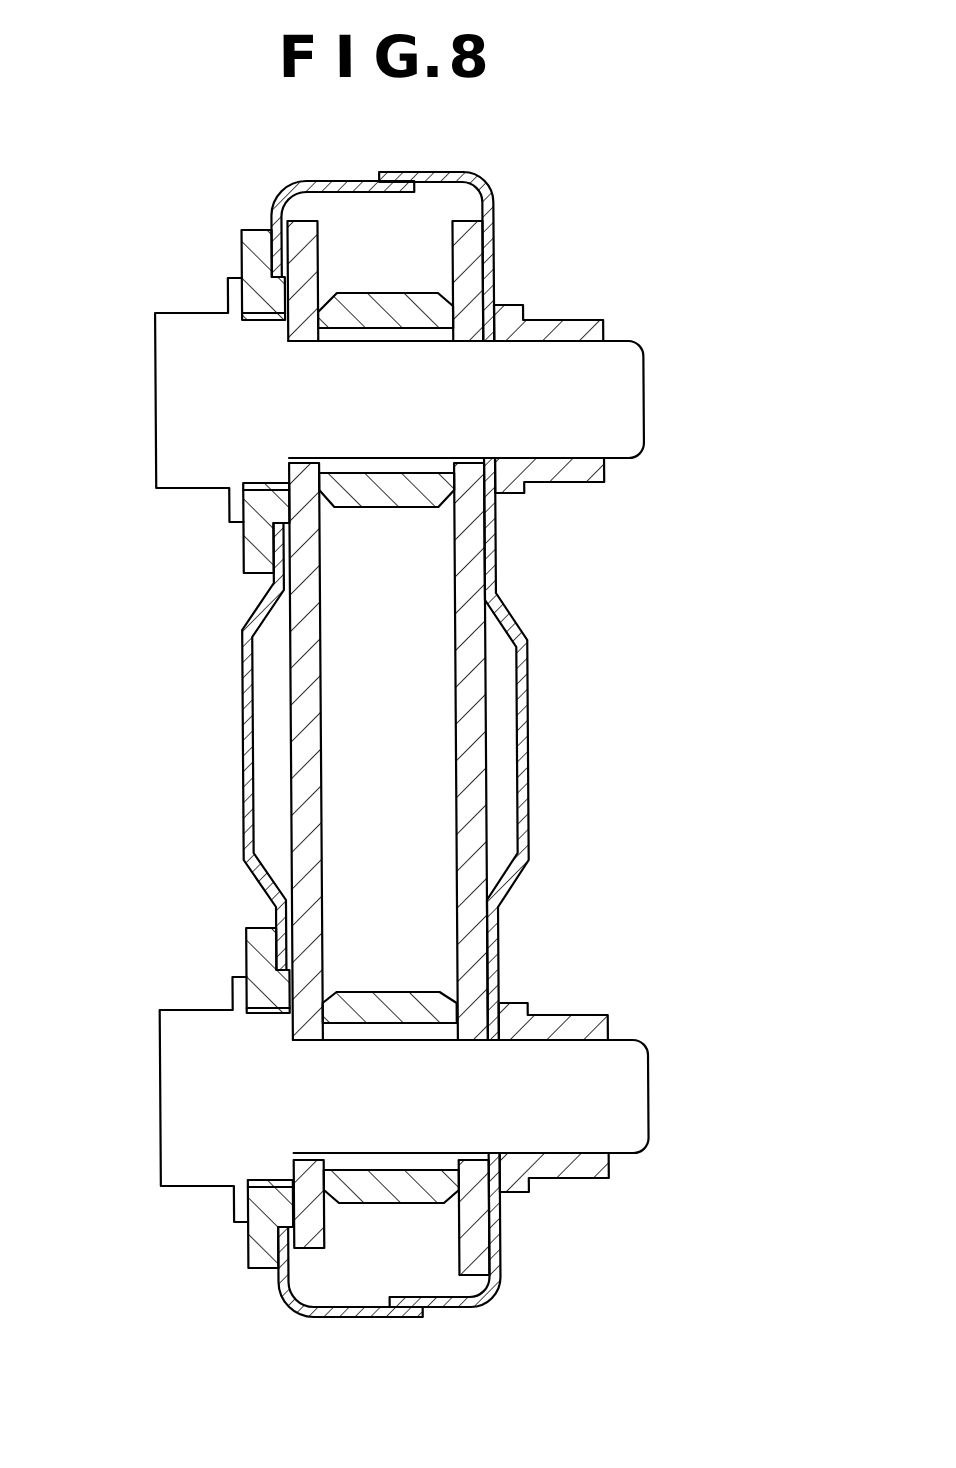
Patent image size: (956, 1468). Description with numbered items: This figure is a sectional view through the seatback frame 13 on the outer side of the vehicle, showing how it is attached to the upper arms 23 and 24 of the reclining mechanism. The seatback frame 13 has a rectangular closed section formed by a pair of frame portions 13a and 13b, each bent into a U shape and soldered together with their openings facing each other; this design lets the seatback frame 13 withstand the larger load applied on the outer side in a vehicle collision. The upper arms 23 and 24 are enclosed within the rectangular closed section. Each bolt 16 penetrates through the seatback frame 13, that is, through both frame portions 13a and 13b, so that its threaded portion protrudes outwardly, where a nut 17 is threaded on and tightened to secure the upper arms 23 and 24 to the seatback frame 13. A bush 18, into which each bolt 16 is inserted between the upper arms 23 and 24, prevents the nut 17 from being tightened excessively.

The seatback frame 13 is at (463, 172).
The frame portion 13a is at (240, 710).
The frame portion 13b is at (526, 722).
The bolt 16 is at (172, 454).
The nut 17 is at (590, 482).
The bush 18 is at (378, 291).
The upper arm 23 is at (288, 823).
The upper arm 24 is at (484, 822).